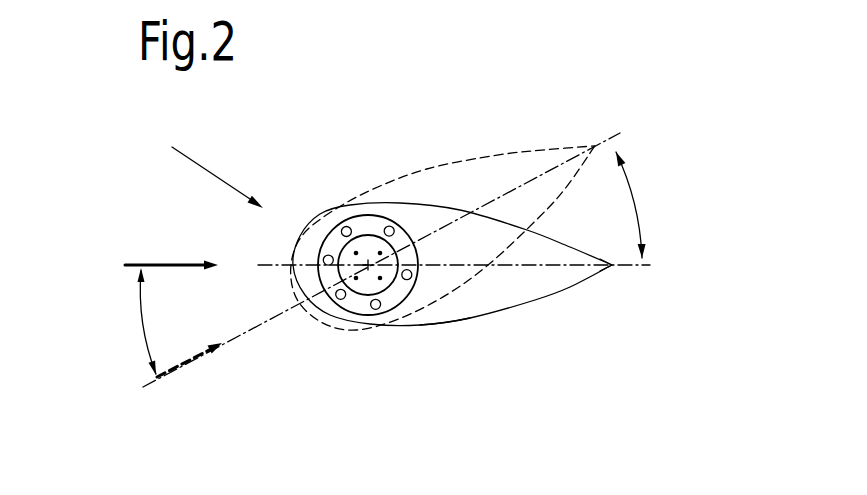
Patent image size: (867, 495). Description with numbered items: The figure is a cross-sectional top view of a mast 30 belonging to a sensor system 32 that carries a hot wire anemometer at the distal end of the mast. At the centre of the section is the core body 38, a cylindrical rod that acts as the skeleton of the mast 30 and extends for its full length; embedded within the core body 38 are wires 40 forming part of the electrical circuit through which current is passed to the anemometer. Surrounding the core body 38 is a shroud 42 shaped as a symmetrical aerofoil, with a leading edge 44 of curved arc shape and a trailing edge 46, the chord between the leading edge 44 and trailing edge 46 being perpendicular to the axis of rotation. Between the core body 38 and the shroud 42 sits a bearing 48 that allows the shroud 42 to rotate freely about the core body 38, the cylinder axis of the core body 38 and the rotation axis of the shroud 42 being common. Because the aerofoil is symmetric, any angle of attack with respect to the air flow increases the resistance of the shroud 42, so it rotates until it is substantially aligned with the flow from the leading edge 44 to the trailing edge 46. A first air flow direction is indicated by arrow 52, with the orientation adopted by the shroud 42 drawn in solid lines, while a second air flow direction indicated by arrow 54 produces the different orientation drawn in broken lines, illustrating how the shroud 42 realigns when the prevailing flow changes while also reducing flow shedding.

The mast 30 is at (418, 213).
The sensor system 32 is at (200, 165).
The core body 38 is at (333, 234).
The wires 40 is at (380, 277).
The shroud 42 is at (525, 287).
The leading edge 44 is at (277, 263).
The trailing edge 46 is at (612, 265).
The bearing 48 is at (403, 290).
The arrow indicating first air flow direction 52 is at (153, 263).
The arrow indicating second air flow direction 54 is at (160, 380).